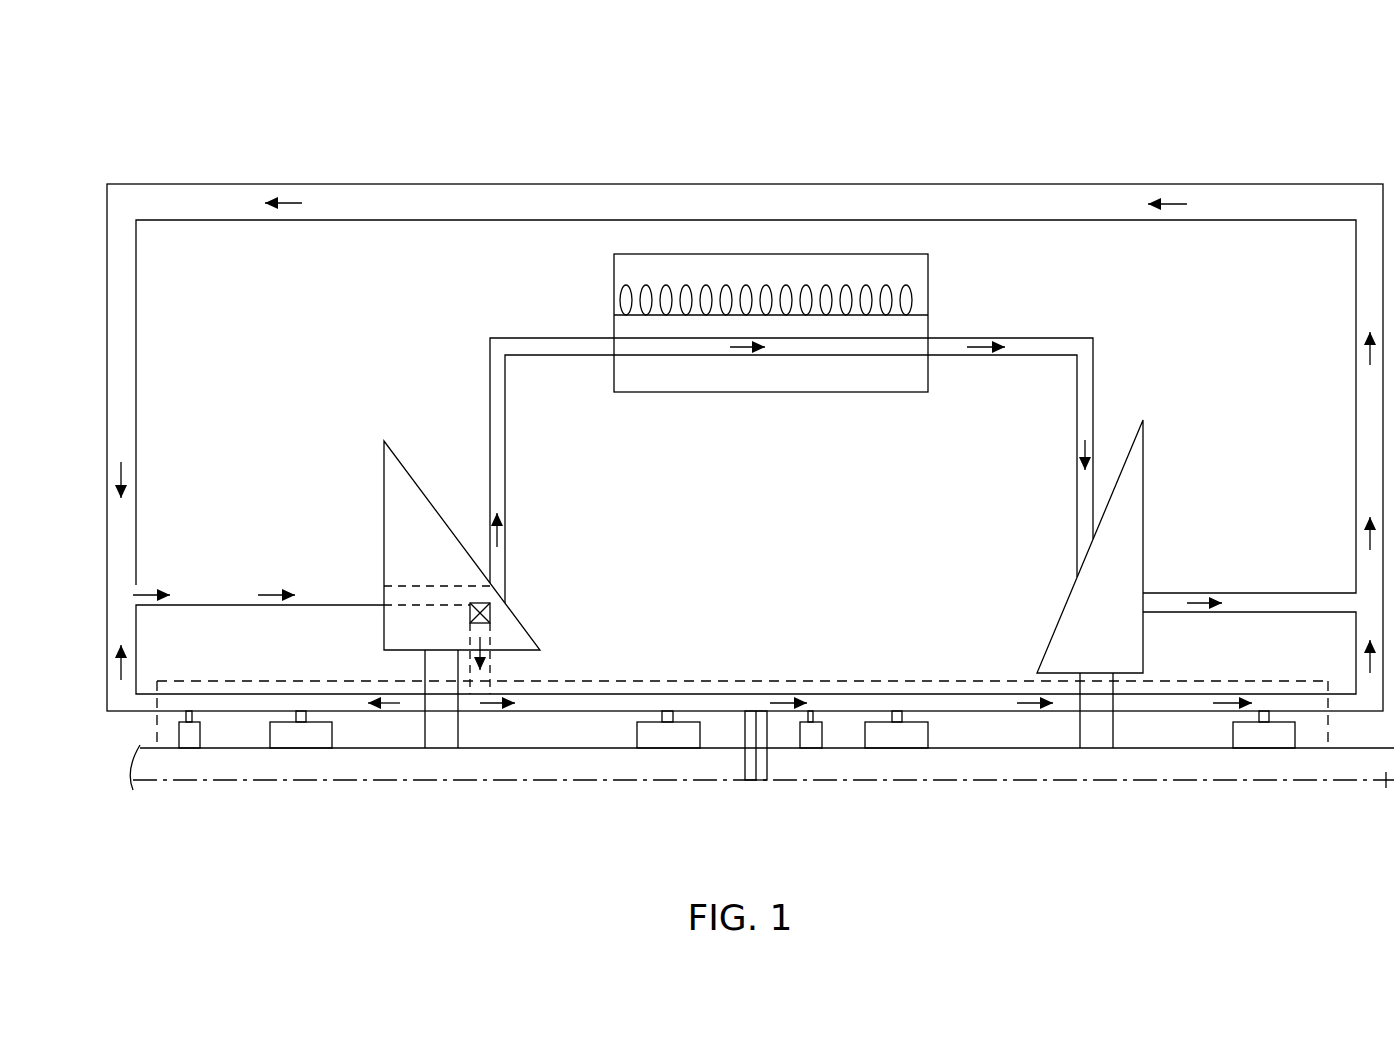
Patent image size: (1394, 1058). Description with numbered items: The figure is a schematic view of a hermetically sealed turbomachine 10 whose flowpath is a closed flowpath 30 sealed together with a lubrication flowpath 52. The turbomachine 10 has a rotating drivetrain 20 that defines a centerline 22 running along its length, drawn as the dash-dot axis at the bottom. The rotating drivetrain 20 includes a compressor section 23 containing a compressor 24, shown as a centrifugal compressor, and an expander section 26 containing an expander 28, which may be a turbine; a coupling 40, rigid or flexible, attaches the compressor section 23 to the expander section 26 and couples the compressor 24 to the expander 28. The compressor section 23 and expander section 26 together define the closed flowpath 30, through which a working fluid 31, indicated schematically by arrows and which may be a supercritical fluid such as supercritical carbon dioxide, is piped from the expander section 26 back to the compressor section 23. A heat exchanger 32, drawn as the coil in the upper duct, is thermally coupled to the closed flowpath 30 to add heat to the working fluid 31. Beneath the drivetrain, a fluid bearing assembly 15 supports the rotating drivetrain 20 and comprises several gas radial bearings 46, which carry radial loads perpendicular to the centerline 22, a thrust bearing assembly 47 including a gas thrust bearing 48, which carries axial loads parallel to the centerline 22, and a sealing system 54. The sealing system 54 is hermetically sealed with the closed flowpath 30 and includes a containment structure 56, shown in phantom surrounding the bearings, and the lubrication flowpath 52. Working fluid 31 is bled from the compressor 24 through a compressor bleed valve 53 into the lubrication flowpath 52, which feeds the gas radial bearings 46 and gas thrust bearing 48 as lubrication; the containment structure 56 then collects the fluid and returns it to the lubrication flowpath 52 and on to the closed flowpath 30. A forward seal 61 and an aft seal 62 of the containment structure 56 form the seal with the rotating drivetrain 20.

The turbomachine 10 is at (1082, 112).
The fluid bearing assembly 15 is at (1100, 802).
The rotating drivetrain 20 is at (245, 797).
The centerline 22 is at (1270, 783).
The compressor section 23 is at (382, 407).
The compressor 24 is at (382, 482).
The expander section 26 is at (1184, 414).
The expander 28 is at (1145, 517).
The closed flowpath 30 is at (248, 222).
The working fluid 31 is at (1170, 206).
The heat exchanger 32 is at (815, 247).
The coupling 40 is at (737, 765).
The gas radial bearing 46 is at (305, 735).
The thrust bearing assembly 47 is at (207, 740).
The gas thrust bearing 48 is at (189, 735).
The lubrication flowpath 52 is at (243, 693).
The compressor bleed valve 53 is at (468, 612).
The sealing system 54 is at (770, 610).
The containment structure 56 is at (620, 680).
The forward seal 61 is at (153, 730).
The aft seal 62 is at (1328, 737).